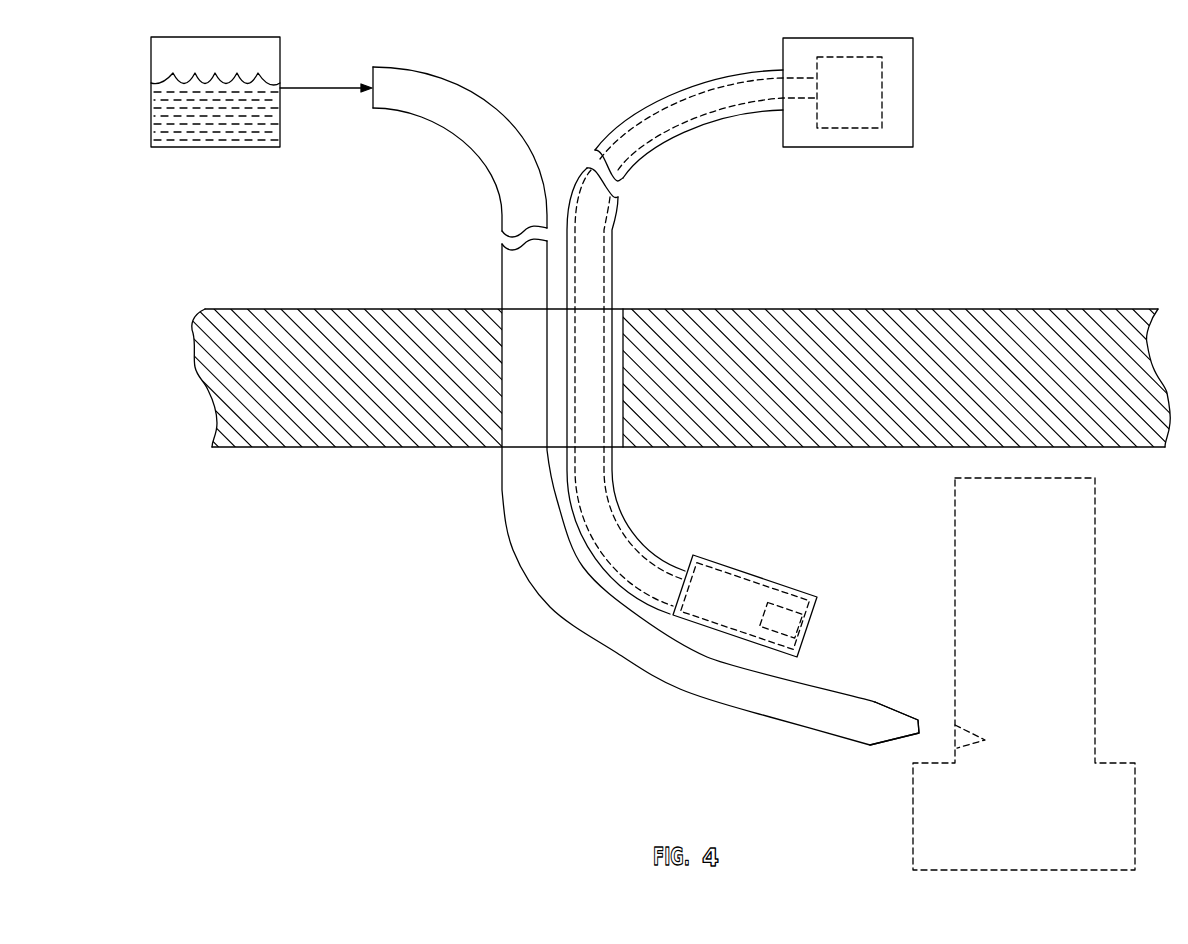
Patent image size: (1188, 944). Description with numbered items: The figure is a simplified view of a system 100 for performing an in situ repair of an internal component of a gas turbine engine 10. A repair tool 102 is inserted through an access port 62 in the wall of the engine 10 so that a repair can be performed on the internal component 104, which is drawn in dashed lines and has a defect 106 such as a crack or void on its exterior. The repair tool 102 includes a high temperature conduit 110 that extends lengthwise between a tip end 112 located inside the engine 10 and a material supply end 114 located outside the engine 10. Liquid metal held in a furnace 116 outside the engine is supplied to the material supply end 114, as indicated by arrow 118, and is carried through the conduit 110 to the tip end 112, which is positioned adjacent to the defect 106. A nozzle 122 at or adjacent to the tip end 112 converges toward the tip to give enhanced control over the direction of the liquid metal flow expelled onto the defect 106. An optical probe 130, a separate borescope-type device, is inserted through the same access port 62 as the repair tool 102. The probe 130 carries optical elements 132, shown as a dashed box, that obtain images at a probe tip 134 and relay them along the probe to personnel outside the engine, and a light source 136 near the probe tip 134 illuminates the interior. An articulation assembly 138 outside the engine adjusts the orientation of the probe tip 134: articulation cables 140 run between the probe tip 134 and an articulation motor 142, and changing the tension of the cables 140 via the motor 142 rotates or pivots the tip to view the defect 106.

The gas turbine engine 10 is at (1048, 308).
The access port 62 is at (623, 335).
The system 100 is at (1073, 138).
The repair tool 102 is at (657, 408).
The internal component 104 is at (1097, 607).
The defect 106 is at (977, 732).
The high temperature conduit 110 is at (657, 408).
The tip end 112 is at (920, 721).
The material supply end 114 is at (373, 67).
The furnace 116 is at (225, 147).
The arrow 118 is at (292, 89).
The nozzle 122 is at (888, 727).
The optical probe 130 is at (766, 361).
The optical elements 132 is at (750, 587).
The probe tip 134 is at (787, 580).
The light source 136 is at (783, 640).
The articulation assembly 138 is at (841, 91).
The articulation cables 140 is at (642, 113).
The articulation motor 142 is at (882, 97).